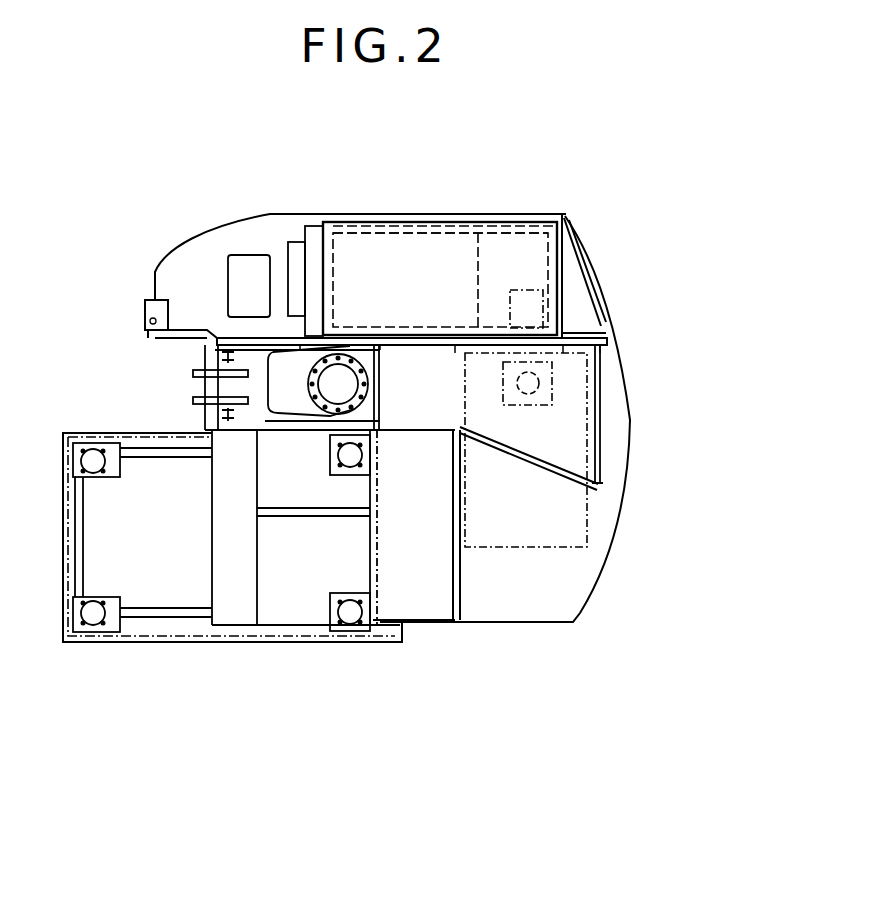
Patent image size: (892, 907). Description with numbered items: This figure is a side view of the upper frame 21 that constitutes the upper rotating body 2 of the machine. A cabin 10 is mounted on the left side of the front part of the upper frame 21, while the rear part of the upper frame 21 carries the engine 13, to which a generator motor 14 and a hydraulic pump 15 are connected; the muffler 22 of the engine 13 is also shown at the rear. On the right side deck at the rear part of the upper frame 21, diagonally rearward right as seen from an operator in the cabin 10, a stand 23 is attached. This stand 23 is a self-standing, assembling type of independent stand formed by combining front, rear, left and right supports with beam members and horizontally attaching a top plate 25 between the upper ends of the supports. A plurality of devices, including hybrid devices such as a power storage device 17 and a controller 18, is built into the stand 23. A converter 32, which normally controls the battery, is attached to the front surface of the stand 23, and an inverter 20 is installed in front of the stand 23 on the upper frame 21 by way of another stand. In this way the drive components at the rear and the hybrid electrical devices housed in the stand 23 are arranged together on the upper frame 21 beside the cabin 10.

The upper rotating body 2 is at (300, 652).
The cabin 10 is at (160, 645).
The engine 13 is at (588, 512).
The generator motor 14 is at (598, 350).
The hydraulic pump 15 is at (545, 307).
The power storage device 17 is at (540, 214).
The controller 18 is at (458, 248).
The inverter 20 is at (245, 255).
The upper frame 21 is at (516, 622).
The muffler 22 is at (556, 383).
The stand 23 is at (588, 243).
The top plate 25 is at (405, 222).
The converter 32 is at (296, 242).